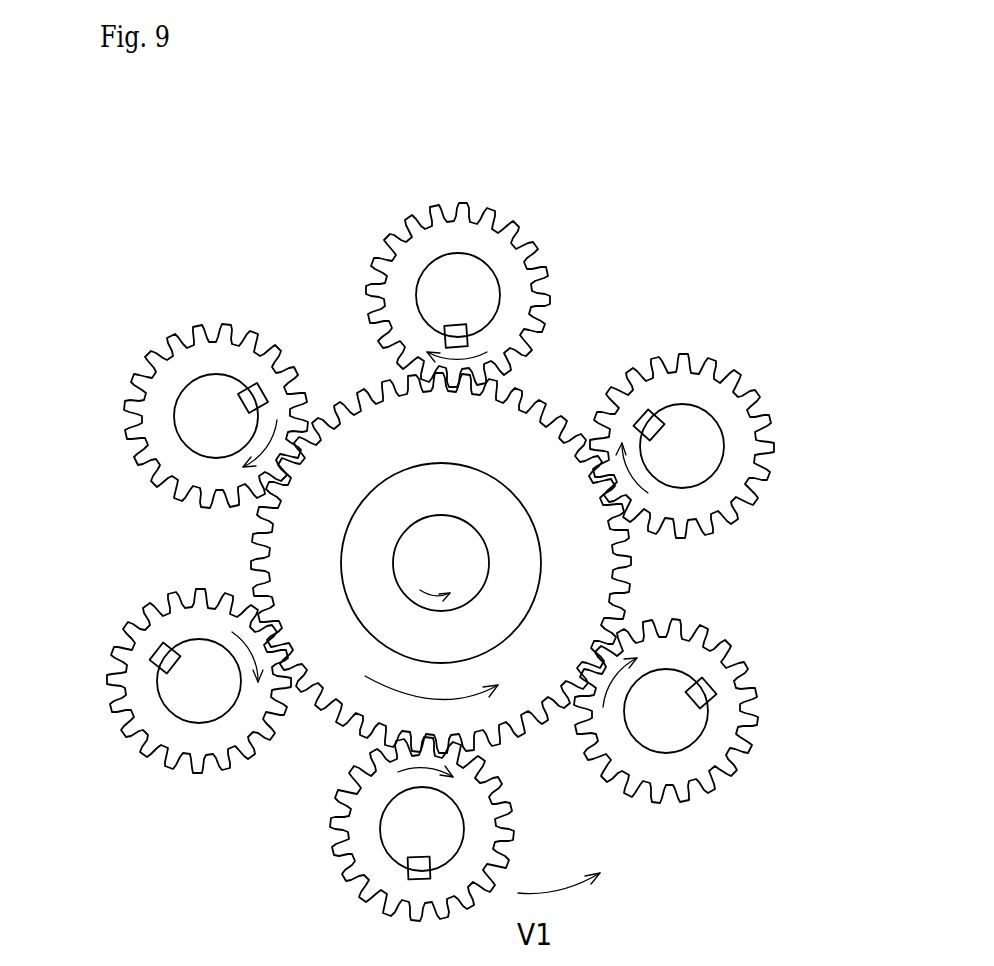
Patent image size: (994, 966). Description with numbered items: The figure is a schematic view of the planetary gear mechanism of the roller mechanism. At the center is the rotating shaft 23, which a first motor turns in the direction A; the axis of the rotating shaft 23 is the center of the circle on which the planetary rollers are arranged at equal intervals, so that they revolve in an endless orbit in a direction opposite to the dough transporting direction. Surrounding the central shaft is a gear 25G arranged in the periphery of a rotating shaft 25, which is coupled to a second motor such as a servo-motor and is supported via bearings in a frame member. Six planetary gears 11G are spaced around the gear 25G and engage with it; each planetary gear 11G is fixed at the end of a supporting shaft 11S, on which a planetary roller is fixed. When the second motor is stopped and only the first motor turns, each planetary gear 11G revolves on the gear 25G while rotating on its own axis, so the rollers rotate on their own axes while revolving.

The planetary gear 11G is at (442, 225).
The supporting shaft 11S is at (428, 275).
The rotating shaft 23 is at (468, 537).
The rotating shaft 25 is at (580, 558).
The gear 25G is at (613, 587).